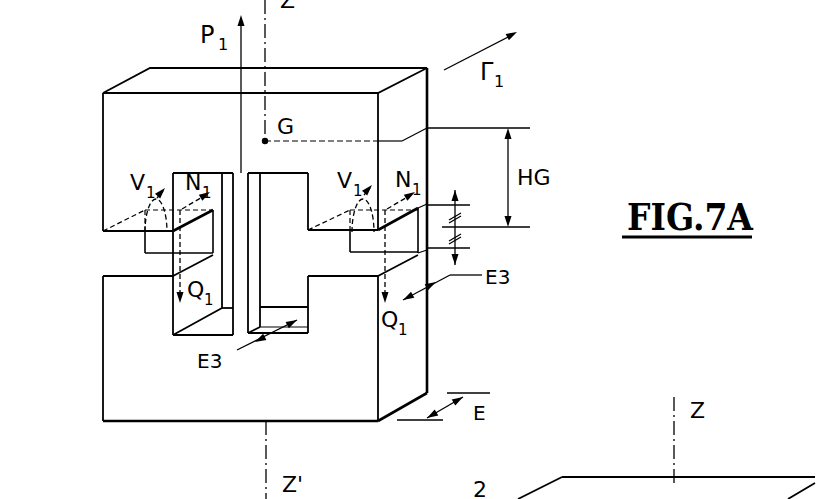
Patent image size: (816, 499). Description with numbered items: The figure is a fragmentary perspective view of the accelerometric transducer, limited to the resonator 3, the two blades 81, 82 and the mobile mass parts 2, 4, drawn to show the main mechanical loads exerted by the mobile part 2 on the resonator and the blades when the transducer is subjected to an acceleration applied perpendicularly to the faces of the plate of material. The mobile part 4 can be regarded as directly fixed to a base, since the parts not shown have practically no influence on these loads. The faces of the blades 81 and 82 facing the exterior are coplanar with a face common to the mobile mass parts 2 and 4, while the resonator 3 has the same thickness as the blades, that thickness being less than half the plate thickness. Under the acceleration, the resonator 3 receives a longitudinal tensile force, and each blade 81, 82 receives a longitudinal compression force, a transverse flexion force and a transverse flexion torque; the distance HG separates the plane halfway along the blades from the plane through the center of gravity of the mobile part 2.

The mobile mass part 2 is at (118, 140).
The resonator 3 is at (258, 233).
The mobile mass part 4 is at (122, 362).
The blade 81 is at (145, 238).
The blade 82 is at (362, 238).